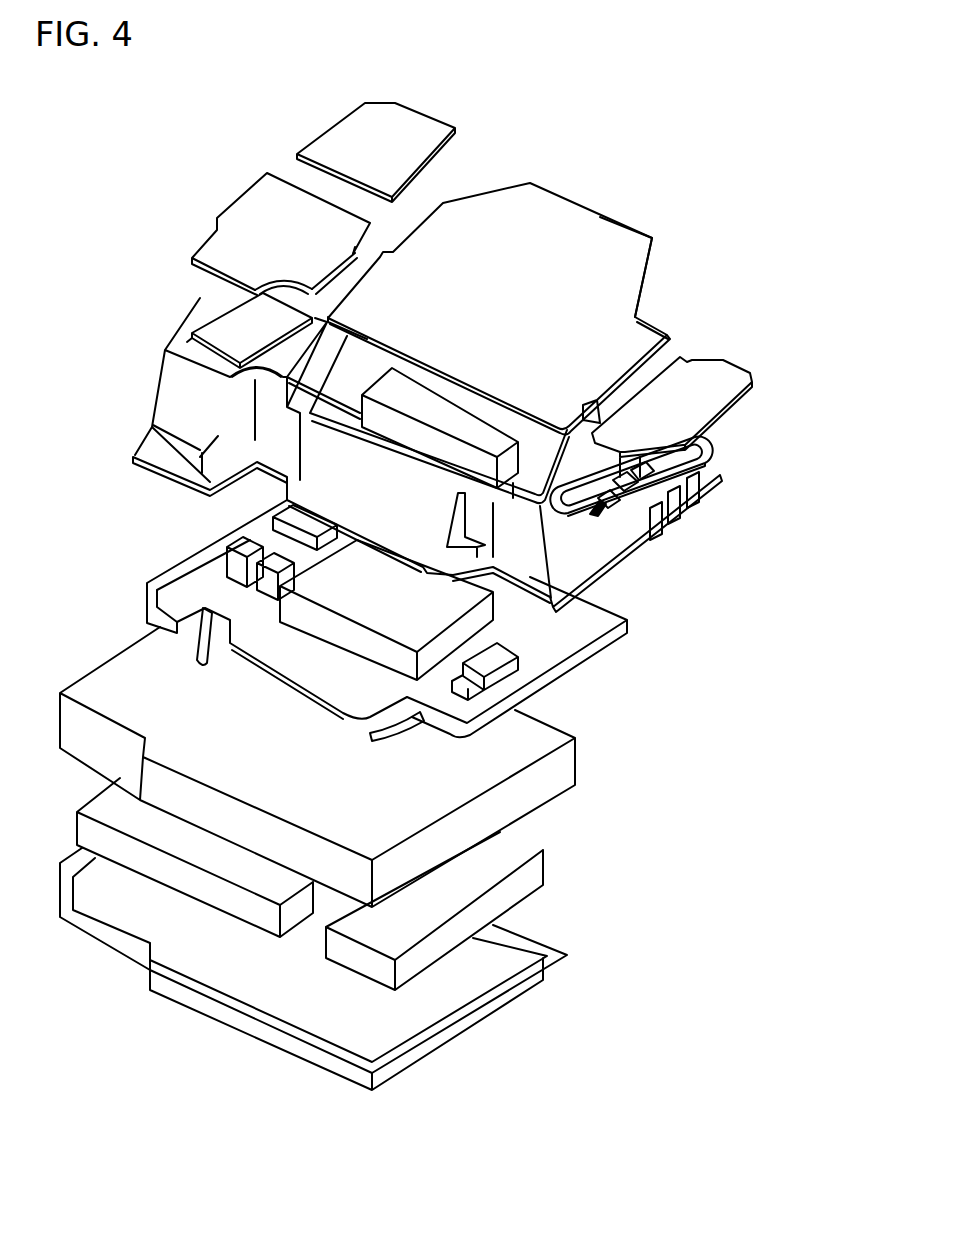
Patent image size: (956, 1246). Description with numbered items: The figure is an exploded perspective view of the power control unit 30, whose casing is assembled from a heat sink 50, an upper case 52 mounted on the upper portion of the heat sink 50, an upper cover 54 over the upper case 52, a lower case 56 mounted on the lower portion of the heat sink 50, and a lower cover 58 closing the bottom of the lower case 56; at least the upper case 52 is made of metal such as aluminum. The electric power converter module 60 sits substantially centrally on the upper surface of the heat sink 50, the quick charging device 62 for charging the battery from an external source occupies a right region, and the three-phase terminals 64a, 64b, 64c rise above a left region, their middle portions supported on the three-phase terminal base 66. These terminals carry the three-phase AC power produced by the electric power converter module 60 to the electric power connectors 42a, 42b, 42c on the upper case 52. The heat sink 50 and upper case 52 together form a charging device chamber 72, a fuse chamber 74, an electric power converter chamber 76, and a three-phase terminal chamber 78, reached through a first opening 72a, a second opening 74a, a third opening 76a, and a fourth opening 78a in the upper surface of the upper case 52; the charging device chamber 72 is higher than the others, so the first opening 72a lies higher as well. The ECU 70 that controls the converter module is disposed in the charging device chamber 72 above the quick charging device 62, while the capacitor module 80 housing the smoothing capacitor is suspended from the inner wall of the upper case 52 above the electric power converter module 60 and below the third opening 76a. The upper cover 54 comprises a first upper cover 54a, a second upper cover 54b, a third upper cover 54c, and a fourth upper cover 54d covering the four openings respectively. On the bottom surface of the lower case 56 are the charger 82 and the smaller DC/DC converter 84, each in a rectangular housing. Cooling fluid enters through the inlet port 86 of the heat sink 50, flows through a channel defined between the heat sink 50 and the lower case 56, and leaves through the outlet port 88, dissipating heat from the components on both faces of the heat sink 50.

The power control unit 30 is at (272, 100).
The electric power connector 42a is at (656, 538).
The electric power connector 42b is at (679, 517).
The electric power connector 42c is at (700, 497).
The heat sink 50 is at (582, 657).
The upper case 52 is at (170, 408).
The upper cover 54 is at (542, 199).
The first upper cover 54a is at (242, 207).
The second upper cover 54b is at (418, 122).
The third upper cover 54c is at (614, 230).
The fourth upper cover 54d is at (714, 368).
The lower case 56 is at (510, 798).
The lower cover 58 is at (393, 1070).
The electric power converter module 60 is at (478, 618).
The quick charging device 62 is at (247, 538).
The three-phase terminal 64a is at (617, 508).
The three-phase terminal 64b is at (620, 478).
The three-phase terminal 64c is at (652, 468).
The three-phase terminal base 66 is at (500, 667).
The ECU 70 is at (233, 320).
The charging device chamber 72 is at (208, 352).
The first opening 72a is at (187, 342).
The fuse chamber 74 is at (343, 287).
The second opening 74a is at (348, 273).
The electric power converter chamber 76 is at (558, 467).
The third opening 76a is at (512, 490).
The three-phase terminal chamber 78 is at (650, 487).
The fourth opening 78a is at (555, 522).
The capacitor module 80 is at (472, 410).
The charger 82 is at (222, 897).
The DC/DC converter 84 is at (355, 958).
The inlet port 86 is at (202, 646).
The outlet port 88 is at (387, 732).